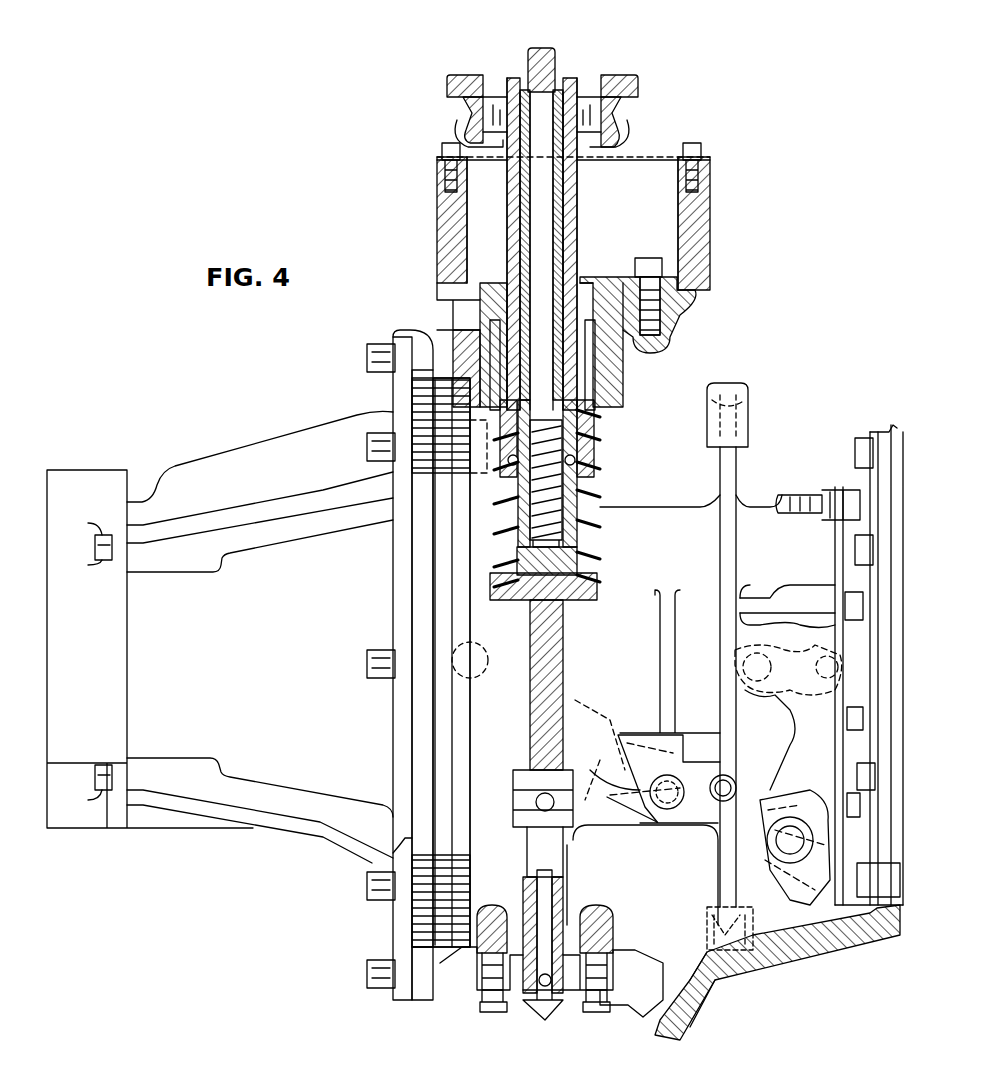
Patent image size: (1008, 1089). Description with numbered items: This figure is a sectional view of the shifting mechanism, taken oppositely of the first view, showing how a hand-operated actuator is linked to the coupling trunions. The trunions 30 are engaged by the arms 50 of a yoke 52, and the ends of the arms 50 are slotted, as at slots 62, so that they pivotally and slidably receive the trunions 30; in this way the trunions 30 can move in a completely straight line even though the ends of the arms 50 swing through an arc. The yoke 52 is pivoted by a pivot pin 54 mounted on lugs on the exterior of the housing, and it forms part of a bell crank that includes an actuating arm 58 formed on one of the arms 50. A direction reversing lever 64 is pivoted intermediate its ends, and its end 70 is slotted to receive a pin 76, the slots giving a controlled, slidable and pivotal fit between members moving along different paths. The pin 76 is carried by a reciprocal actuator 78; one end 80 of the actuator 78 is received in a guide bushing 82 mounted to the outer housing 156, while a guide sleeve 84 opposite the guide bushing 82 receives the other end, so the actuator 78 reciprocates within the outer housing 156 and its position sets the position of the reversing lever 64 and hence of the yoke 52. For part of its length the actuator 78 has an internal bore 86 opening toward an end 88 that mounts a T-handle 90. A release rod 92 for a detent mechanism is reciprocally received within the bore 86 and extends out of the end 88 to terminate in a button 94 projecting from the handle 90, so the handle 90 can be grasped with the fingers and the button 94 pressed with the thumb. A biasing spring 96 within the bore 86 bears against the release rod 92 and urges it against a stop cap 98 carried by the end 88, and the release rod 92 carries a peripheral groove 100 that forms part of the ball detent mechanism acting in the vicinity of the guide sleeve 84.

The trunions 30 is at (832, 655).
The arms 50 is at (768, 745).
The yoke 52 is at (780, 950).
The pivot pin 54 is at (830, 933).
The actuating arm 58 is at (740, 740).
The slots 62 is at (730, 637).
The direction reversing lever 64 is at (655, 830).
The end of reversing lever 70 is at (522, 752).
The pin 76 is at (400, 845).
The reciprocal actuator 78 is at (527, 705).
The end of actuator 80 is at (470, 935).
The guide bushing 82 is at (482, 1008).
The guide sleeve 84 is at (588, 285).
The internal bore 86 is at (433, 517).
The end of actuator 88 is at (483, 150).
The T-handle 90 is at (455, 75).
The release rod 92 is at (577, 222).
The button 94 is at (530, 54).
The biasing spring 96 is at (568, 595).
The stop cap 98 is at (563, 95).
The peripheral groove 100 is at (585, 338).
The outer housing 156 is at (455, 990).